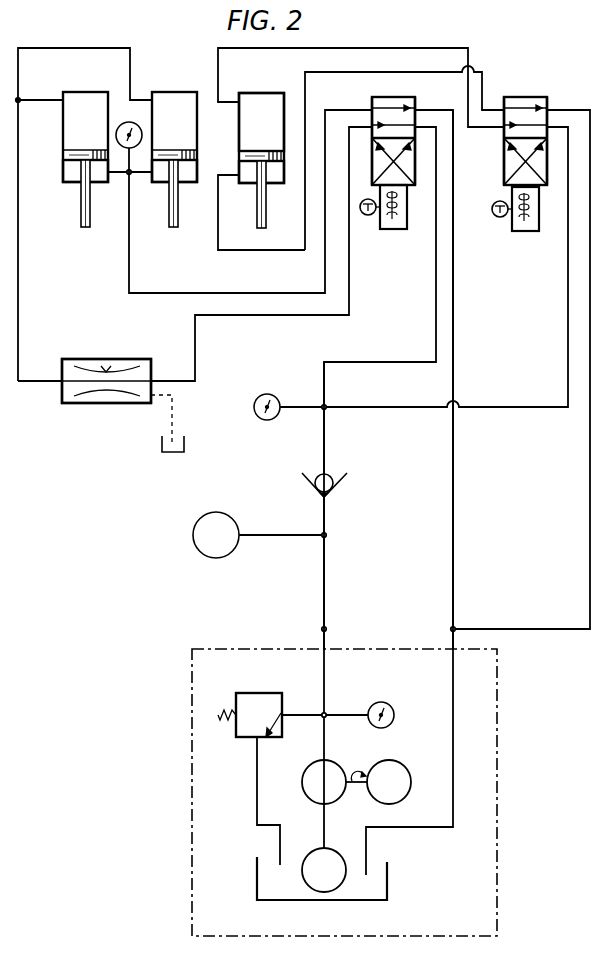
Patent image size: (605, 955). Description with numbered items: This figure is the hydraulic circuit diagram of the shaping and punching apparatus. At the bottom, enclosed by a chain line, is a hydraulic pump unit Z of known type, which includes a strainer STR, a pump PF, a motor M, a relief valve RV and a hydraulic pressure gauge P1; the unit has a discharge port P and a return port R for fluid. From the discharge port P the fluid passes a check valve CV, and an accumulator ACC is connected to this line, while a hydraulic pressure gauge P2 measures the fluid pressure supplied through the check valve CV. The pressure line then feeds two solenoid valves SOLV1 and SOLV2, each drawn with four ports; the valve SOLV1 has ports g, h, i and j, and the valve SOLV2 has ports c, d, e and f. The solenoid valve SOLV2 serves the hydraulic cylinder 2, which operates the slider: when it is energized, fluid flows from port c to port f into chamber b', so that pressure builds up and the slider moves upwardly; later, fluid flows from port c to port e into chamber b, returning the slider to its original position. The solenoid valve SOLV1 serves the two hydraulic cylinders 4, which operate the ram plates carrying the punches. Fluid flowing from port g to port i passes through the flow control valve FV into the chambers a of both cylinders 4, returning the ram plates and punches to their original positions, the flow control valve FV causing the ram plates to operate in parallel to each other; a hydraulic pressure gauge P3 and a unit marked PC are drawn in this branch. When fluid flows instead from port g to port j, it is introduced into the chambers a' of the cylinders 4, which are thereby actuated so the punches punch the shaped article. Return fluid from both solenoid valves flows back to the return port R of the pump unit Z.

The hydraulic cylinder 2 is at (258, 93).
The hydraulic cylinders 4 is at (104, 182).
The chamber a is at (120, 125).
The chamber a' is at (120, 182).
The chamber b is at (252, 122).
The chamber b' is at (254, 194).
The port c is at (554, 156).
The port d is at (556, 112).
The port e is at (496, 156).
The port f is at (495, 112).
The port g is at (424, 156).
The port h is at (424, 111).
The port i is at (366, 158).
The port j is at (369, 109).
The solenoid valve SOLV1 is at (396, 189).
The solenoid valve SOLV2 is at (523, 189).
The hydraulic pressure gauge P1 is at (395, 708).
The hydraulic pressure gauge P2 is at (260, 396).
The hydraulic pressure gauge P3 is at (128, 125).
The discharge port P is at (336, 505).
The return port R is at (438, 379).
The flow control valve FV is at (123, 395).
The pressure compensator PC is at (106, 372).
The check valve CV is at (300, 483).
The accumulator ACC is at (216, 535).
The hydraulic pump unit Z is at (190, 701).
The relief valve RV is at (250, 703).
The pump PF is at (324, 782).
The motor M is at (381, 782).
The strainer STR is at (324, 870).